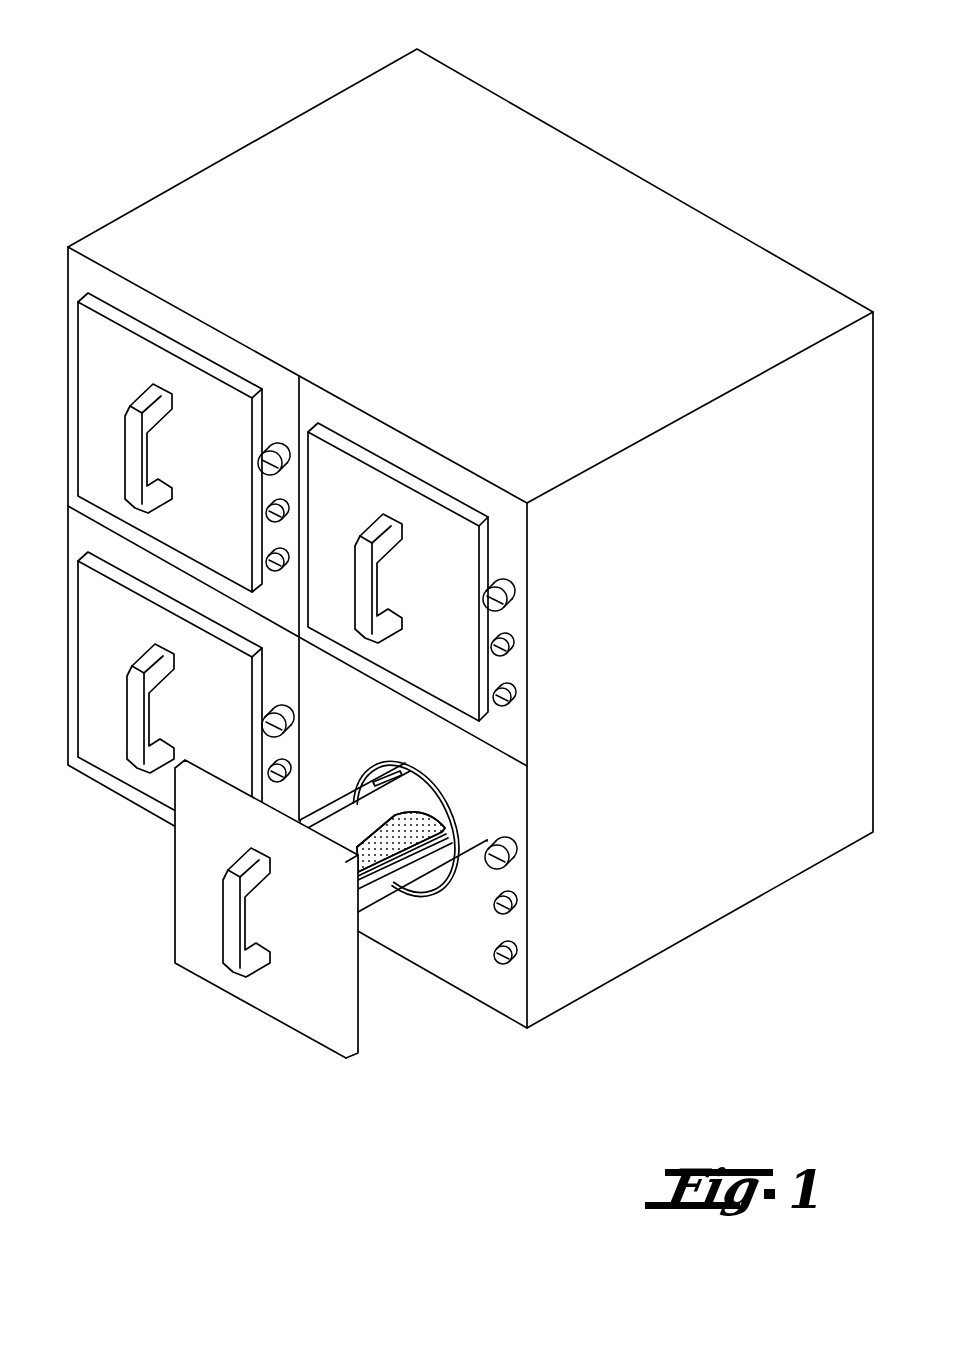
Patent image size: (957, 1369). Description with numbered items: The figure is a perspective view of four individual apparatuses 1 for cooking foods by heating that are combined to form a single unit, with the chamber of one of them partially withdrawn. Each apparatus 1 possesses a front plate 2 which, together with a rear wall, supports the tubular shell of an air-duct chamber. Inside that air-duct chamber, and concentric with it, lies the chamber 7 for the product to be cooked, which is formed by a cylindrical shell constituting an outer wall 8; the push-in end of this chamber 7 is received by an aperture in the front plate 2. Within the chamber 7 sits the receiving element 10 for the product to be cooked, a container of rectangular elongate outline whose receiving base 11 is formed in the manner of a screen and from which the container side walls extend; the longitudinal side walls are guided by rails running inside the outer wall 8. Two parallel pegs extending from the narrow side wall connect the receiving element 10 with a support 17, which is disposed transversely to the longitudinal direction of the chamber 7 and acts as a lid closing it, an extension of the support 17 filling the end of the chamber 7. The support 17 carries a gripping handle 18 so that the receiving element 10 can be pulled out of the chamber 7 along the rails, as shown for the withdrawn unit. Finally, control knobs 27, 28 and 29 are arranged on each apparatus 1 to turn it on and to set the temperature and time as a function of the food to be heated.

The apparatus 1 is at (337, 422).
The front plate 2 is at (443, 962).
The chamber for the product to be cooked 7 is at (440, 883).
The outer wall 8 is at (450, 827).
The receiving element for the product to be cooked 10 is at (341, 828).
The receiving base 11 is at (402, 828).
The support 17 is at (207, 405).
The gripping handle 18 is at (145, 447).
The control knob 27 is at (500, 603).
The control knob 28 is at (503, 650).
The control knob 29 is at (505, 702).